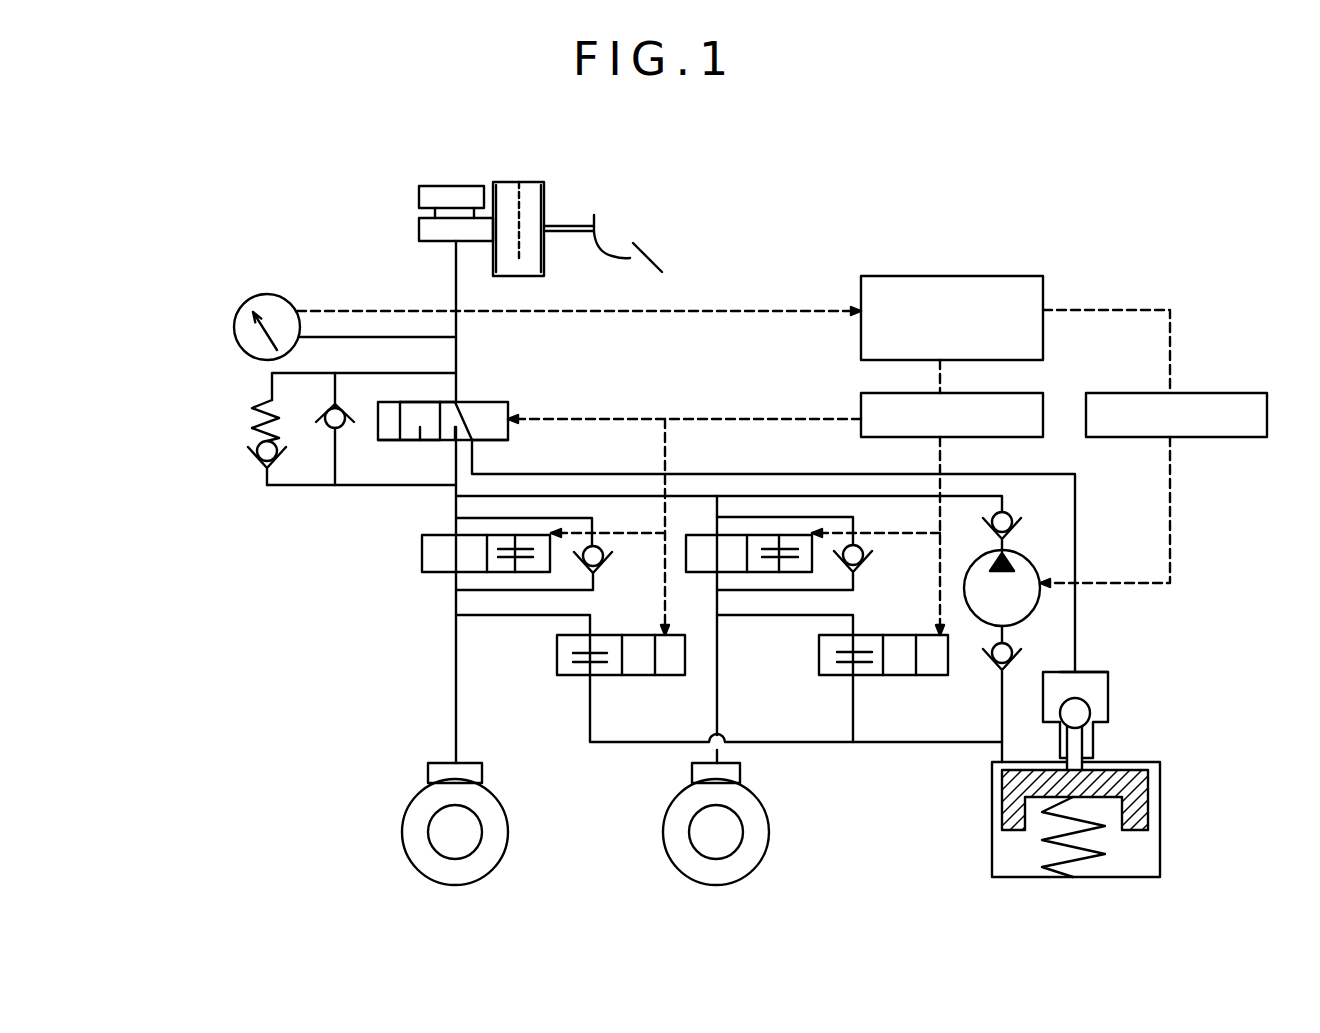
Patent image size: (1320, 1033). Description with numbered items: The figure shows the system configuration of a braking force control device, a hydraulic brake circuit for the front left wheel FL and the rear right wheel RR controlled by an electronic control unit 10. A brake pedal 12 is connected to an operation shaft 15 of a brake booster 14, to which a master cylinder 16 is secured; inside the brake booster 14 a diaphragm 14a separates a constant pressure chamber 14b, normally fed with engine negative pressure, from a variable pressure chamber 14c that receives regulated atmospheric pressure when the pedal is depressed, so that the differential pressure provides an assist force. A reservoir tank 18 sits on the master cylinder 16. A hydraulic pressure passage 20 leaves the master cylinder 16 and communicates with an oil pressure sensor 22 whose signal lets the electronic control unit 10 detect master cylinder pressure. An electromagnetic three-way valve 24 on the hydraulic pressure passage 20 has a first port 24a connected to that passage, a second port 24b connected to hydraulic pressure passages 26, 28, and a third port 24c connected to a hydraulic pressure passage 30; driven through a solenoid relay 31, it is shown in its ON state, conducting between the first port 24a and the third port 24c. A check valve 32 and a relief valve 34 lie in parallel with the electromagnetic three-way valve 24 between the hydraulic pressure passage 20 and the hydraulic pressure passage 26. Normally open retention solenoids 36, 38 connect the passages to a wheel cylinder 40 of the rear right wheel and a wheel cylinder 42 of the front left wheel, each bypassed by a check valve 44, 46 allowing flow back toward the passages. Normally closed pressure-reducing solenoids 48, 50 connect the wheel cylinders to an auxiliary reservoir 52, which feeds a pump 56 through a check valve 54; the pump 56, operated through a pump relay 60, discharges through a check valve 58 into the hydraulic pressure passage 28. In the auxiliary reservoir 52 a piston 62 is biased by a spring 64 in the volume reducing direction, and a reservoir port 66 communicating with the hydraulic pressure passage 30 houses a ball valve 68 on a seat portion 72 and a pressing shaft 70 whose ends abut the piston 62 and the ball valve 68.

The electronic control unit 10 is at (987, 276).
The brake pedal 12 is at (630, 258).
The brake booster 14 is at (545, 192).
The diaphragm 14a is at (520, 260).
The constant pressure chamber 14b is at (505, 182).
The variable pressure chamber 14c is at (527, 182).
The operation shaft 15 is at (580, 233).
The master cylinder 16 is at (432, 242).
The reservoir tank 18 is at (419, 192).
The hydraulic pressure passage 20 is at (457, 283).
The oil pressure sensor 22 is at (243, 352).
The electromagnetic three-way valve 24 is at (492, 402).
The first port 24a is at (456, 402).
The second port 24b is at (452, 443).
The third port 24c is at (475, 443).
The hydraulic pressure passage 26 is at (455, 505).
The hydraulic pressure passage 28 is at (592, 496).
The hydraulic pressure passage 30 is at (600, 474).
The solenoid relay 31 is at (861, 405).
The check valve 32 is at (343, 430).
The relief valve 34 is at (252, 459).
The retention solenoid 36 is at (435, 572).
The retention solenoid 38 is at (697, 572).
The wheel cylinder 40 is at (482, 773).
The wheel cylinder 42 is at (740, 773).
The check valve 44 is at (600, 566).
The check valve 46 is at (862, 566).
The pressure-reducing solenoid 48 is at (630, 675).
The pressure-reducing solenoid 50 is at (885, 675).
The auxiliary reservoir 52 is at (1165, 826).
The check valve 54 is at (993, 667).
The pump 56 is at (1034, 612).
The check valve 58 is at (1010, 513).
The pump relay 60 is at (1210, 393).
The piston 62 is at (1130, 770).
The spring 64 is at (1087, 855).
The reservoir port 66 is at (1108, 686).
The ball valve 68 is at (1090, 713).
The pressing shaft 70 is at (1067, 748).
The seat portion 72 is at (1069, 700).